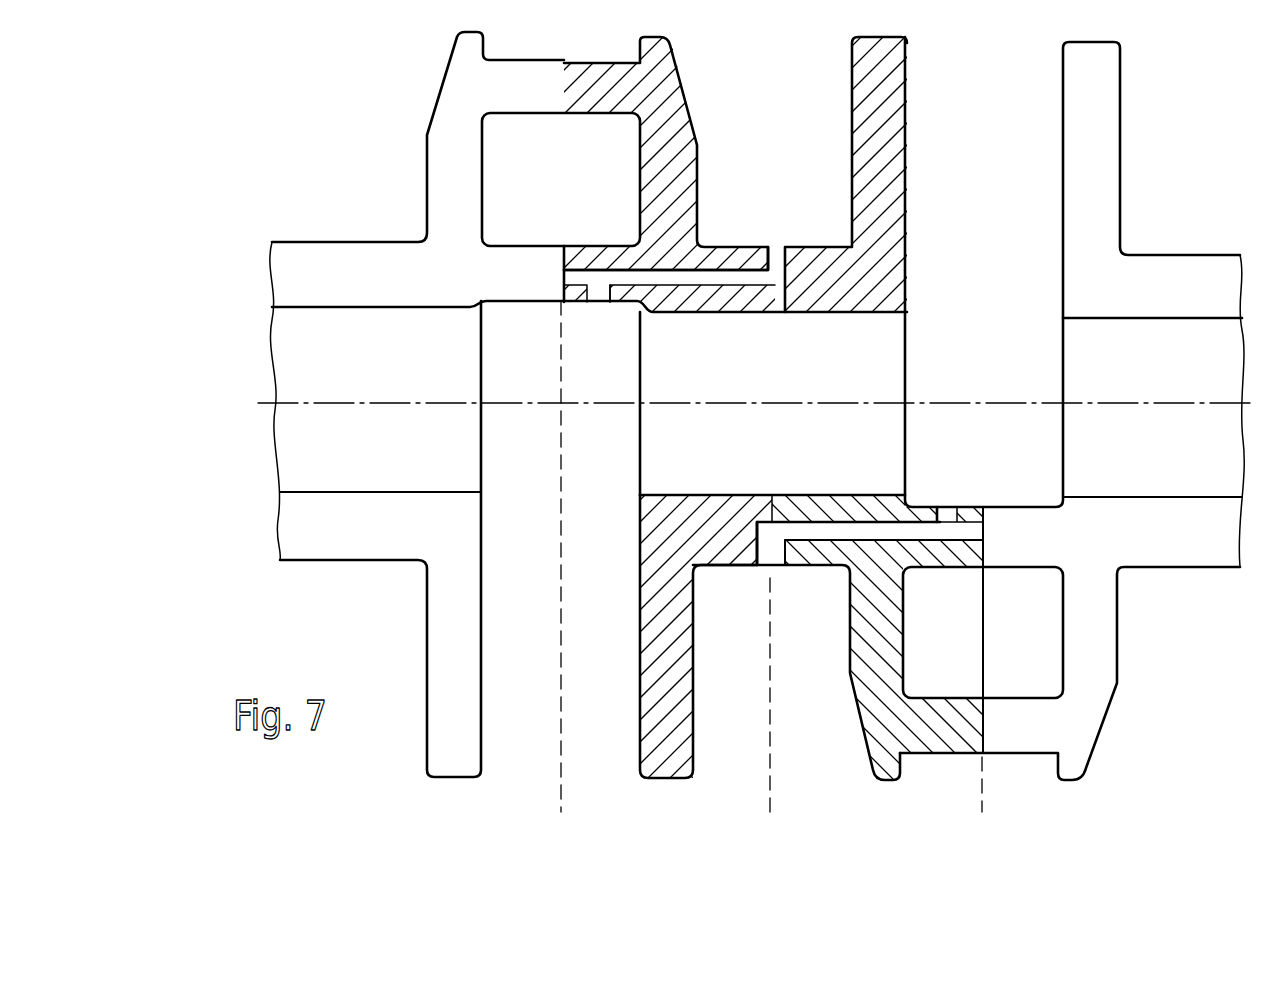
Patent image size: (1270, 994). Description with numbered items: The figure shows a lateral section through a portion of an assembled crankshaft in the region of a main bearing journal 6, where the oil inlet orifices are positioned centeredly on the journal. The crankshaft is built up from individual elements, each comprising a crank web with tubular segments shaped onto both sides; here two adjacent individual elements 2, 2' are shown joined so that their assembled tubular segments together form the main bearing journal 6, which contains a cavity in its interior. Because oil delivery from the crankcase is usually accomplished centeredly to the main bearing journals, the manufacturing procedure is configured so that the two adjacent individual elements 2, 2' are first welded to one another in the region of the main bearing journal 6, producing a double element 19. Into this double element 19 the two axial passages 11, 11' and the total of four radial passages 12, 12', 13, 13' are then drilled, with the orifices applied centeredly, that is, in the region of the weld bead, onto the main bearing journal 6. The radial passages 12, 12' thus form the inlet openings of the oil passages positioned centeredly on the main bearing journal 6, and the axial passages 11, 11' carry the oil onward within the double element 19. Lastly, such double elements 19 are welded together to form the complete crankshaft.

The individual element 2 is at (635, 439).
The adjacent individual element 2' is at (635, 439).
The main bearing journal 6 is at (732, 537).
The axial passage 11 is at (855, 617).
The axial passage 11' is at (635, 410).
The radial passage 12 is at (870, 573).
The radial passage 12' is at (684, 232).
The radial passage 13 is at (855, 618).
The radial passage 13' is at (635, 410).
The double element 19 is at (558, 853).